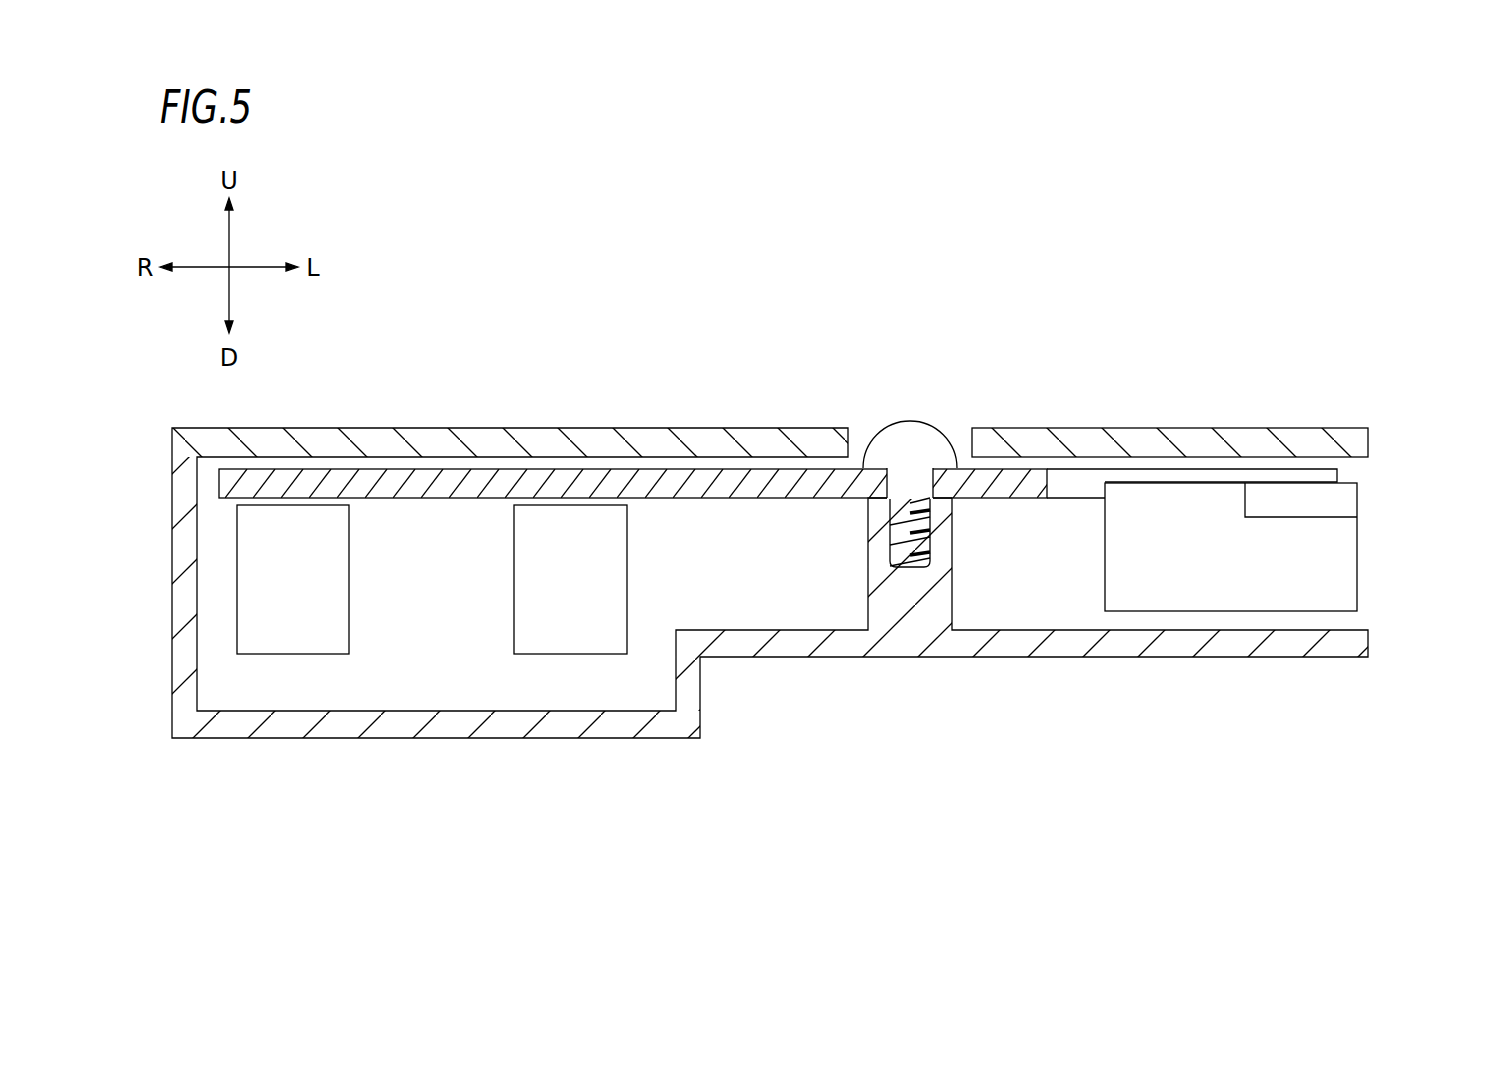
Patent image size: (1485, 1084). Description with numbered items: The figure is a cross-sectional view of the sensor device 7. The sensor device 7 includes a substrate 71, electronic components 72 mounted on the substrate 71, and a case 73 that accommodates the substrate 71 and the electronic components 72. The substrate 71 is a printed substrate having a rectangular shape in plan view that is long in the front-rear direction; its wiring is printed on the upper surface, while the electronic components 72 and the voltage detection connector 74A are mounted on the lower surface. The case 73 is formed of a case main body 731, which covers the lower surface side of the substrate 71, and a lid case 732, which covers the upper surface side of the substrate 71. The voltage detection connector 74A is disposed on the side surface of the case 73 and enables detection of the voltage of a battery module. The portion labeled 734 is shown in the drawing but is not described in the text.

The sensor device 7 is at (1266, 348).
The substrate 71 is at (433, 468).
The electronic components 72 is at (248, 551).
The case 73 is at (658, 427).
The case main body 731 is at (1000, 659).
The lid case 732 is at (1072, 428).
The bottom portion 734 is at (400, 672).
The voltage detection connector 74A is at (1343, 560).